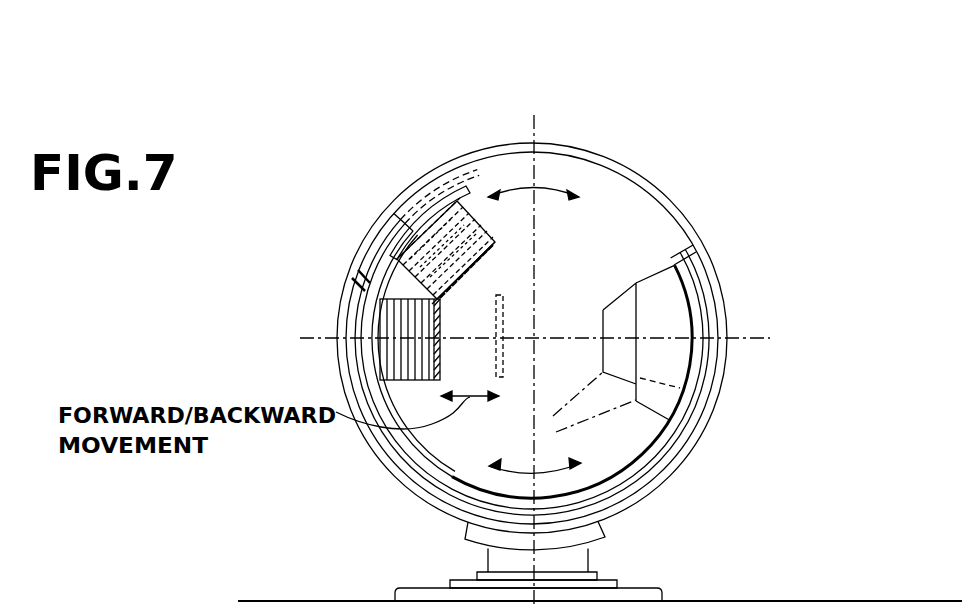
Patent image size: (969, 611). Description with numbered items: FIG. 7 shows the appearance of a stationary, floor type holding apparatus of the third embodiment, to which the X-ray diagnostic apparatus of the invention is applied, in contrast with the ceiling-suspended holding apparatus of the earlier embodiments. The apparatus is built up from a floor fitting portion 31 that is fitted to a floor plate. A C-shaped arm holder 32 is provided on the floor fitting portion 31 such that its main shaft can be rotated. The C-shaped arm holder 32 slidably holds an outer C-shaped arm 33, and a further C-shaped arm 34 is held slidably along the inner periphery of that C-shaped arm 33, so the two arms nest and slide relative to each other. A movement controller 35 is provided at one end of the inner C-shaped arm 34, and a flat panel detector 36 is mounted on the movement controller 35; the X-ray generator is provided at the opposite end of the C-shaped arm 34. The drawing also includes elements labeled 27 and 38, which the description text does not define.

The light beam axis 27 is at (573, 494).
The floor fitting portion 31 is at (645, 587).
The C-shaped arm holder 32 is at (505, 557).
The C-shaped arm 33 is at (446, 504).
The C-shaped arm 34 is at (413, 455).
The movement controller 35 is at (377, 297).
The flat panel detector 36 is at (462, 277).
The drive element 38 is at (392, 202).